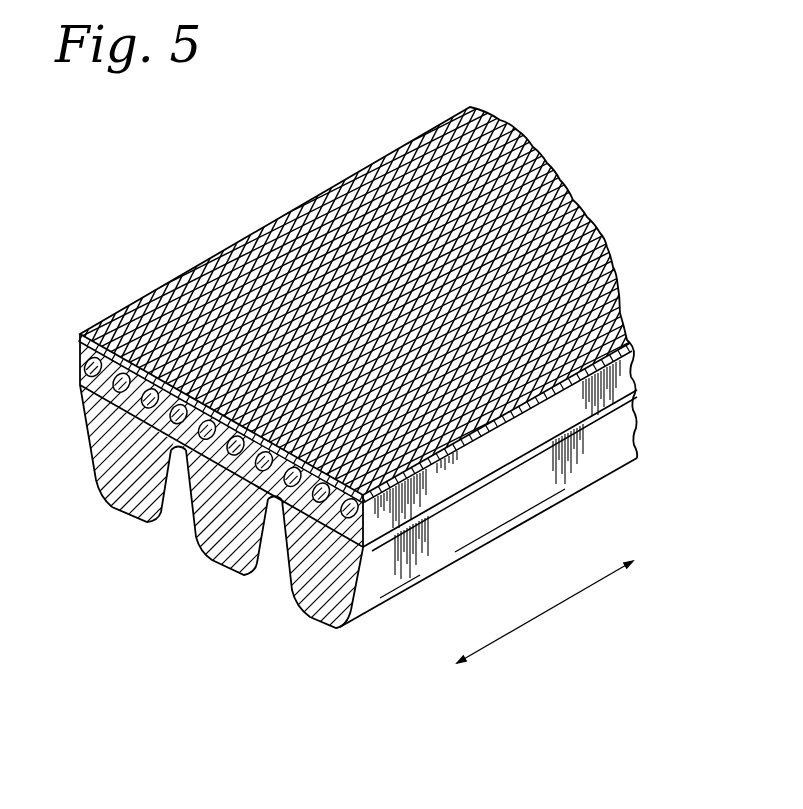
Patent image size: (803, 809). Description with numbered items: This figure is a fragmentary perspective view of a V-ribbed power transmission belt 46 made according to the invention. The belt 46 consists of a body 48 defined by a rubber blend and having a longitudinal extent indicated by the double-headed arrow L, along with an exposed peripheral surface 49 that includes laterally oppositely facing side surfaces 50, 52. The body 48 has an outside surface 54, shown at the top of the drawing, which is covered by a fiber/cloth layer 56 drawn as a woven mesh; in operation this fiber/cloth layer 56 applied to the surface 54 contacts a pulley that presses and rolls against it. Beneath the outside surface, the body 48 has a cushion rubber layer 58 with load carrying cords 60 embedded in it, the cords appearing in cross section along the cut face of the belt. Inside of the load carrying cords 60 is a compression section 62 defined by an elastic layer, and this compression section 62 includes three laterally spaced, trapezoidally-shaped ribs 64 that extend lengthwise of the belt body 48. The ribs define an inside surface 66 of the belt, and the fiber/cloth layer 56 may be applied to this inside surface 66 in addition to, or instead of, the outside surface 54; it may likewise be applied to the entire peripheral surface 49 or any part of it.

The V-ribbed belt 46 is at (618, 133).
The body 48 is at (633, 364).
The exposed peripheral surface 49 is at (553, 410).
The side surface 50 is at (330, 187).
The side surface 52 is at (617, 380).
The outside surface 54 is at (560, 345).
The fiber/cloth layer 56 is at (413, 177).
The cushion rubber layer 58 is at (83, 357).
The load carrying cords 60 is at (263, 497).
The compression section 62 is at (102, 497).
The ribs 64 is at (207, 553).
The inside surface 66 is at (233, 567).
The longitudinal extent L is at (540, 618).